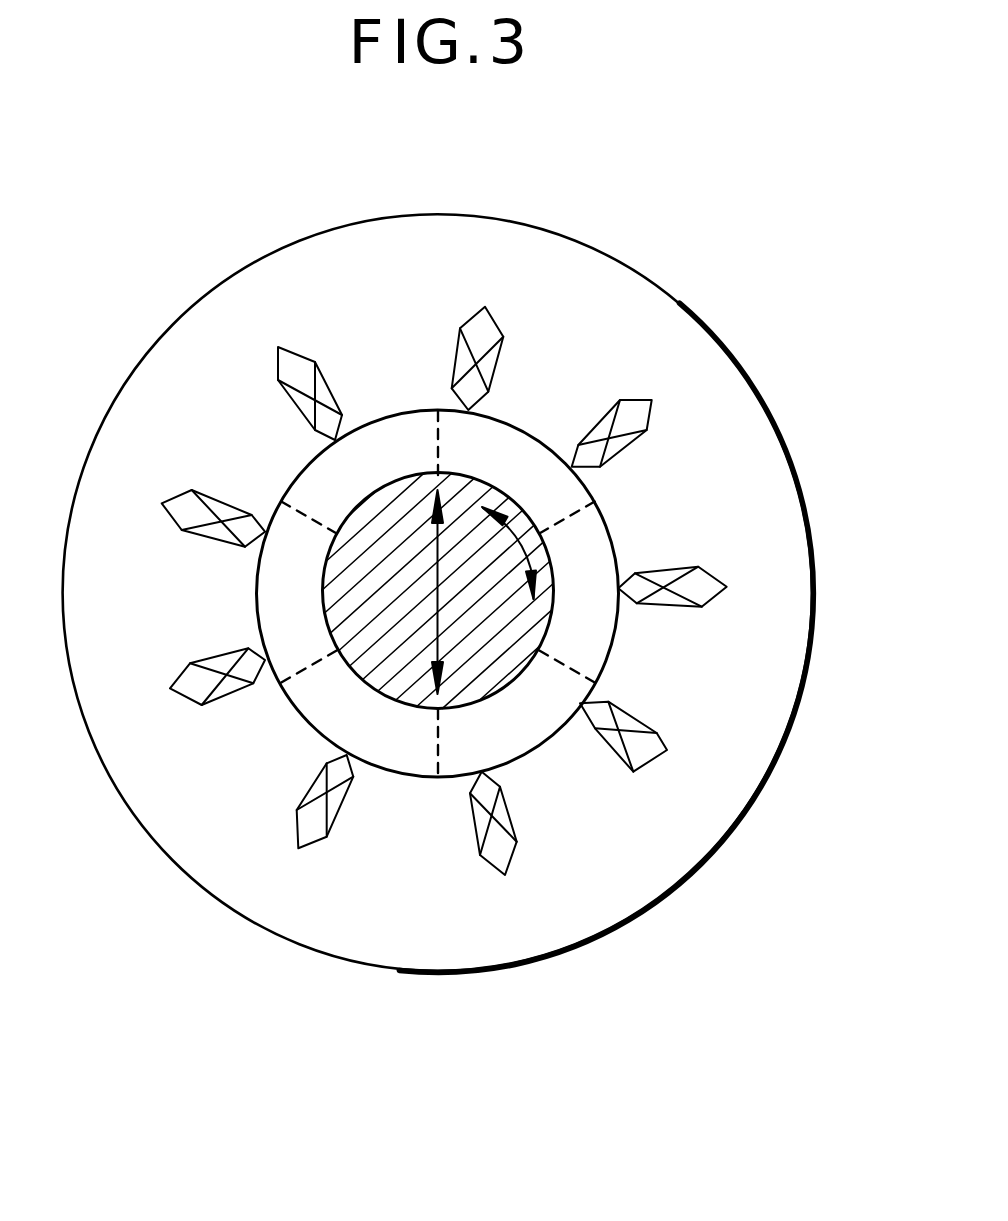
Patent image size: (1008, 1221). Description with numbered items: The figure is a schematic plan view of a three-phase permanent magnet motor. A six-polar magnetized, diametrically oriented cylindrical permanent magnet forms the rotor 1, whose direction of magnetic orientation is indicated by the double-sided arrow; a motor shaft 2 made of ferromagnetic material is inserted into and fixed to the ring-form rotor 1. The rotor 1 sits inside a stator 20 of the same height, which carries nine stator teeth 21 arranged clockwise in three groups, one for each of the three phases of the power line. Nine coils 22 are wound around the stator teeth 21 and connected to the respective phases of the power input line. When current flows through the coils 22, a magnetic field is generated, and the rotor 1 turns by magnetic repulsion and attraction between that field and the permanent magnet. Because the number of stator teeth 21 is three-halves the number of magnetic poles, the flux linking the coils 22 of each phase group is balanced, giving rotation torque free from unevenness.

The rotor 1 is at (519, 673).
The motor shaft 2 is at (363, 663).
The stator 20 is at (749, 420).
The stator teeth 21 is at (665, 632).
The coils 22 is at (673, 746).